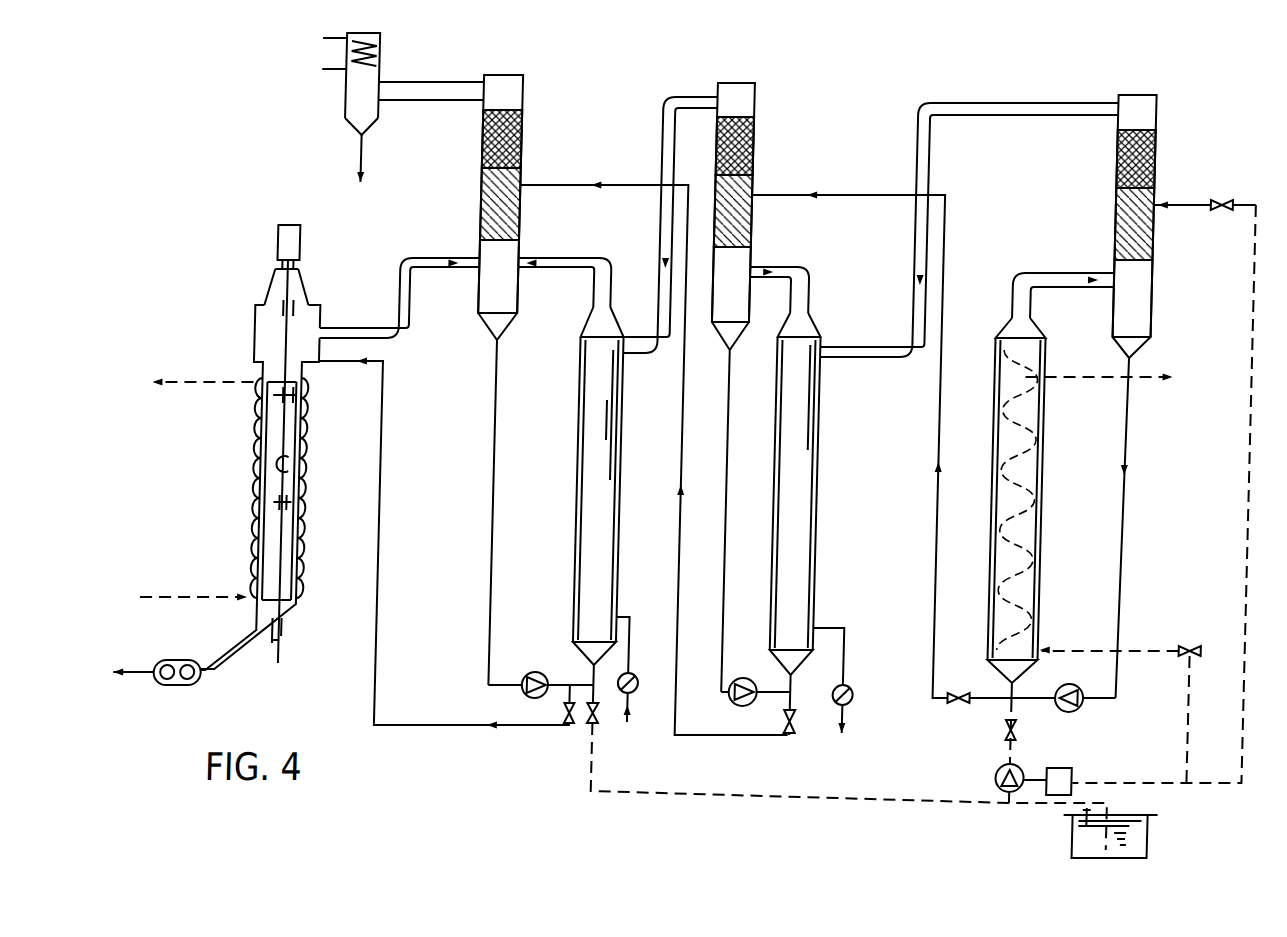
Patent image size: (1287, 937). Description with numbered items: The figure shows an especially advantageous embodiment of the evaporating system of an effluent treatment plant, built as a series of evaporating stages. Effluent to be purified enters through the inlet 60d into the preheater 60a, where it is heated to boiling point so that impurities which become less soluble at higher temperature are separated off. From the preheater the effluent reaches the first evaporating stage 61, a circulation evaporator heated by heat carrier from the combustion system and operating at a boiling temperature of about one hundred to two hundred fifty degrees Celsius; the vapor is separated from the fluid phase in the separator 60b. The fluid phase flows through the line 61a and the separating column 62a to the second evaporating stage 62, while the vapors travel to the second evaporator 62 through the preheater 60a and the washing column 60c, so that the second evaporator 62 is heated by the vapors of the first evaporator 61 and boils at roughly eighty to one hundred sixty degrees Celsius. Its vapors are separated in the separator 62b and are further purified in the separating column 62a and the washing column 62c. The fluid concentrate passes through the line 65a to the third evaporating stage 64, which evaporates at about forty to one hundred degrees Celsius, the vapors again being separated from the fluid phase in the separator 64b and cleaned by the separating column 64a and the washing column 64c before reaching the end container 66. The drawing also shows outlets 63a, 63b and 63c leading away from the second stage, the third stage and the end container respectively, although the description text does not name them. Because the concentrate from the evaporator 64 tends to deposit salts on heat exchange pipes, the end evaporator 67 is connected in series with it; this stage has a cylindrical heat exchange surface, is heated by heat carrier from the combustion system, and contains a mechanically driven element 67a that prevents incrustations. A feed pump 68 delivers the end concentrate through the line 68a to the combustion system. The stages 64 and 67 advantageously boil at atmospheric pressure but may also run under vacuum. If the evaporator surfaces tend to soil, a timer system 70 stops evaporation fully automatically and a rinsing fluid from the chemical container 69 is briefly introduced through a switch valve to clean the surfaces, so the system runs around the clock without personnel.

The preheater 60a is at (1160, 232).
The separator 60b is at (1153, 318).
The washing column 60c is at (1160, 162).
The inlet 60d is at (1178, 480).
The first evaporating stage 61 is at (1050, 509).
The line 61a is at (950, 426).
The second evaporating stage 62 is at (820, 482).
The separating column 62a is at (760, 220).
The separator 62b is at (748, 312).
The washing column 62c is at (758, 140).
The drain line with gauge 63a is at (866, 712).
The drain line with gauge 63b is at (640, 695).
The condensate outlet 63c is at (370, 152).
The third evaporating stage 64 is at (589, 471).
The separating column 64a is at (526, 213).
The separator 64b is at (517, 303).
The washing column 64c is at (526, 120).
The line 65a is at (693, 509).
The end container 66 is at (380, 58).
The end evaporator 67 is at (323, 446).
The mechanically driven element 67a is at (302, 506).
The feed pump 68 is at (203, 683).
The line 68a is at (150, 670).
The chemical container 69 is at (1161, 842).
The timer system 70 is at (1092, 780).